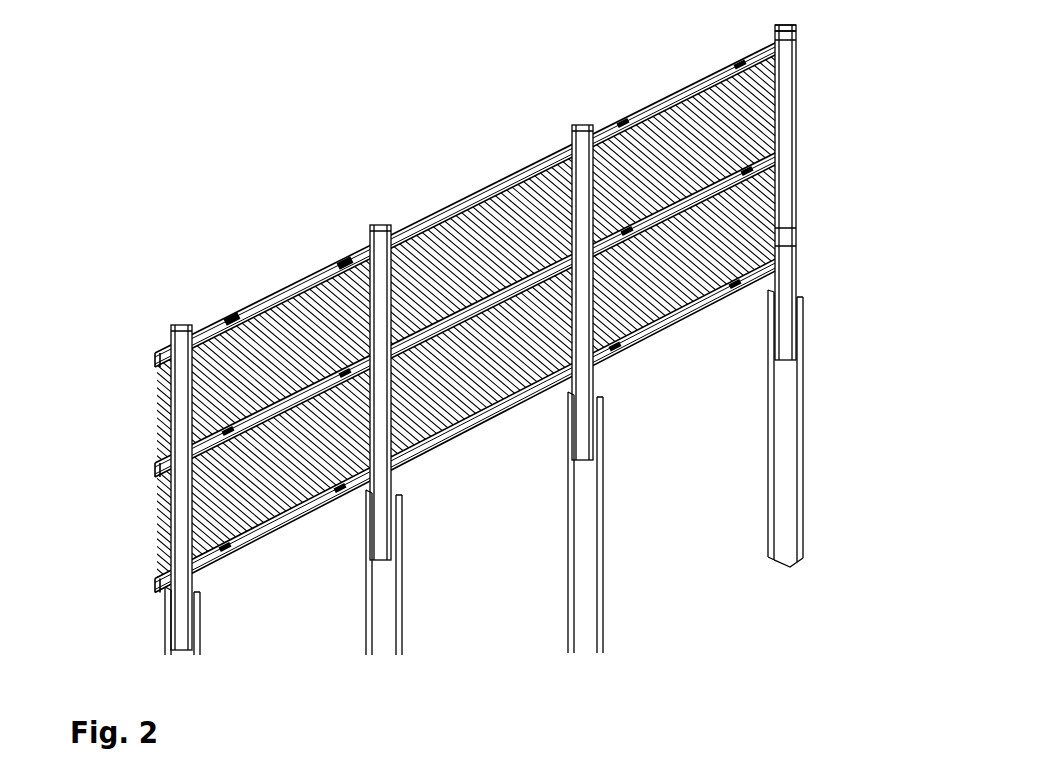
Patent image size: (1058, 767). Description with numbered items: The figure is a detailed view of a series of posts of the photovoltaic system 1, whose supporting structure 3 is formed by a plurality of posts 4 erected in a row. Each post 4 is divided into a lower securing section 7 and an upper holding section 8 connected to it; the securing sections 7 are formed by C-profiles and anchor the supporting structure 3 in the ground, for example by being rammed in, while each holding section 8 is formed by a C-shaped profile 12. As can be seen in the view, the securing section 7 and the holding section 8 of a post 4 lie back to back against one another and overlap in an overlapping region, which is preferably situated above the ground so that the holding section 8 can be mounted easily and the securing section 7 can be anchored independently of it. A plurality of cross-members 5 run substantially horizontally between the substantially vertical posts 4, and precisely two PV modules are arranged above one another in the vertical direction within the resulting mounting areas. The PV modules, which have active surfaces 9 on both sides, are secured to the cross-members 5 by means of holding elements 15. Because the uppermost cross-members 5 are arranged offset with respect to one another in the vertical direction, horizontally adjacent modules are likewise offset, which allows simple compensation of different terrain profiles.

The photovoltaic system 1 is at (369, 127).
The supporting structure 3 is at (825, 192).
The post 4 is at (791, 100).
The cross-member 5 is at (486, 195).
The securing section 7 is at (790, 428).
The holding section 8 is at (793, 236).
The active surface 9 is at (318, 353).
The C-shaped profile 12 is at (578, 137).
The holding element 15 is at (343, 262).